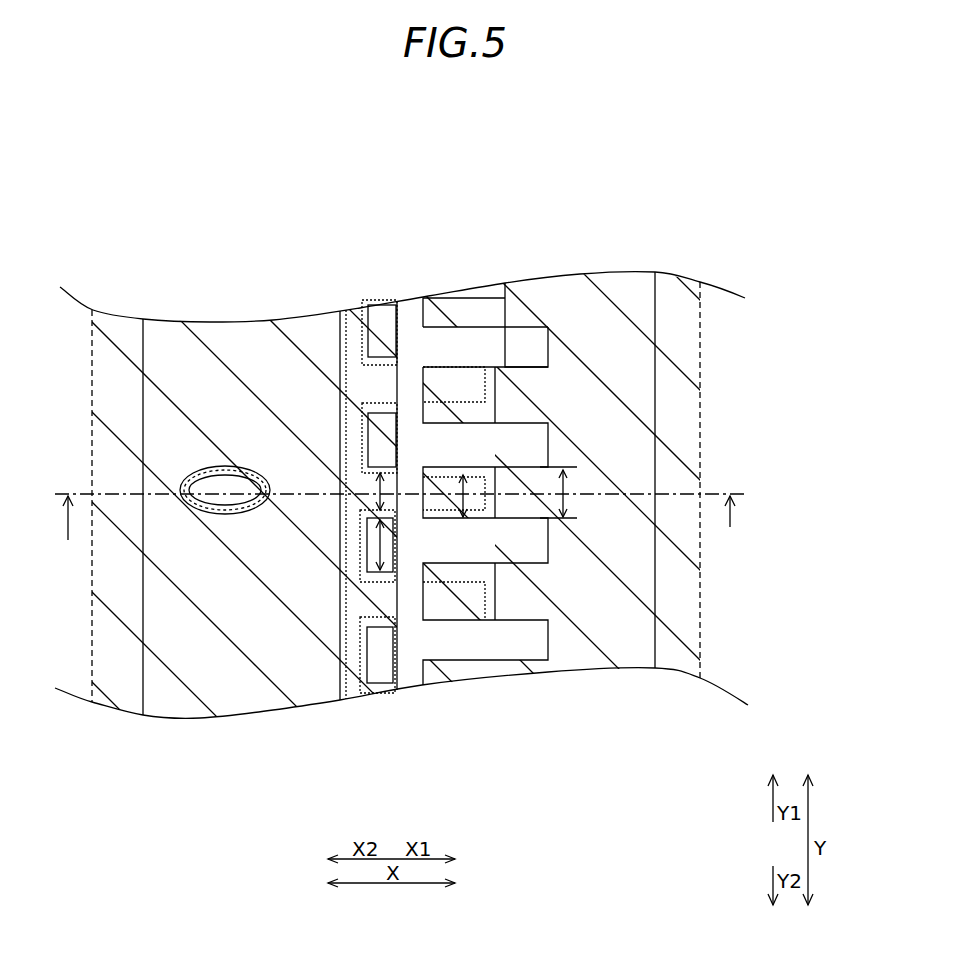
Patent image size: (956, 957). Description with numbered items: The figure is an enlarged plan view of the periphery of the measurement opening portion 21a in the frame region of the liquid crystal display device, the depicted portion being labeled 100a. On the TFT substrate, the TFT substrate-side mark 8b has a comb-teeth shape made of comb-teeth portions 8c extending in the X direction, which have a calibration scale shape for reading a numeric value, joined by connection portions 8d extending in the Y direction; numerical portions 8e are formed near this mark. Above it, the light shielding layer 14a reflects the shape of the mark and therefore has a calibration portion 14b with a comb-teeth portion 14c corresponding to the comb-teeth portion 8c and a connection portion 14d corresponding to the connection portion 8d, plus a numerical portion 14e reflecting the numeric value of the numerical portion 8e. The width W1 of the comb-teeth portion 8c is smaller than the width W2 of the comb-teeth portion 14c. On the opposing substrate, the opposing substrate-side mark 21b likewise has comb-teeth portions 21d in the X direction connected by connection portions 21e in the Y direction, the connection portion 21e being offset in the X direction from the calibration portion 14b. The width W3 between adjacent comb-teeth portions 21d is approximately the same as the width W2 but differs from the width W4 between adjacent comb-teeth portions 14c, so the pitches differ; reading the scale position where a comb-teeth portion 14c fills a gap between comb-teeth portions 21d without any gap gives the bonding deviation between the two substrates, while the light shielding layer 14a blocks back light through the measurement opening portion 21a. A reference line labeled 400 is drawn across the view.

The semiconductor device 100a is at (767, 236).
The calibration portion 14b is at (340, 336).
The connection portion 14d is at (338, 405).
The numerical portion 14e is at (237, 462).
The numerical portion 8e is at (215, 468).
The TFT substrate-side mark 8b is at (372, 340).
The connection portion 8d is at (385, 352).
The comb-teeth portion 8c is at (400, 372).
The connection portion 21e is at (410, 390).
The opposing substrate-side mark 21b is at (462, 326).
The comb-teeth portion 21d is at (548, 322).
The comb-teeth portion 14c is at (503, 375).
The measurement opening portion 21a is at (630, 290).
The light shielding layer 14a is at (700, 330).
The width of comb-teeth portion 8c W1 is at (378, 480).
The width of comb-teeth portion 14c W2 is at (467, 483).
The width between comb-teeth portions 21d W3 is at (568, 492).
The width between comb-teeth portions 14c W4 is at (378, 552).
The center line 400 is at (400, 535).